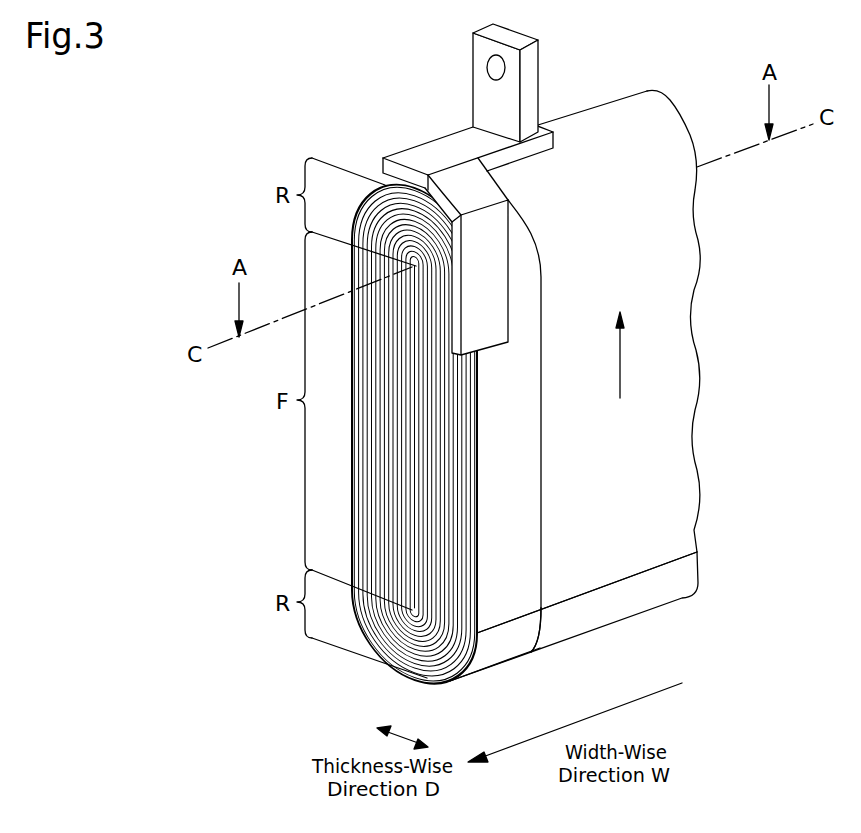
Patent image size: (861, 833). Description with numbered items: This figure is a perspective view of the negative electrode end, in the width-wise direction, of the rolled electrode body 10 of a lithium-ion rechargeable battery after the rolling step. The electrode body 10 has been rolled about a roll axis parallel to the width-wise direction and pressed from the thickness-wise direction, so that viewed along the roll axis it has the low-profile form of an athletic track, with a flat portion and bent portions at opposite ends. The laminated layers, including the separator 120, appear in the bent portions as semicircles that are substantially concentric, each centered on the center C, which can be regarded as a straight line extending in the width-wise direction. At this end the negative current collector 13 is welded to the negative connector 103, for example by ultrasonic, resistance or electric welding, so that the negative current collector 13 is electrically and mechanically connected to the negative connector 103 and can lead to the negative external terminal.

The electrode body 10 is at (698, 595).
The negative current collector 13 is at (425, 153).
The negative connector 103 is at (484, 663).
The separator 120 is at (592, 608).